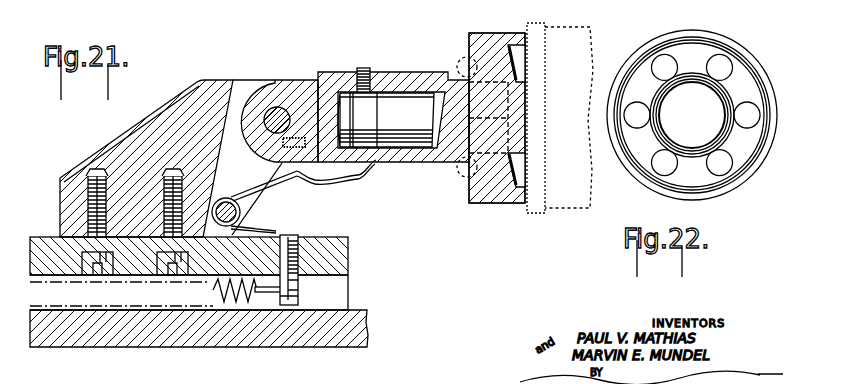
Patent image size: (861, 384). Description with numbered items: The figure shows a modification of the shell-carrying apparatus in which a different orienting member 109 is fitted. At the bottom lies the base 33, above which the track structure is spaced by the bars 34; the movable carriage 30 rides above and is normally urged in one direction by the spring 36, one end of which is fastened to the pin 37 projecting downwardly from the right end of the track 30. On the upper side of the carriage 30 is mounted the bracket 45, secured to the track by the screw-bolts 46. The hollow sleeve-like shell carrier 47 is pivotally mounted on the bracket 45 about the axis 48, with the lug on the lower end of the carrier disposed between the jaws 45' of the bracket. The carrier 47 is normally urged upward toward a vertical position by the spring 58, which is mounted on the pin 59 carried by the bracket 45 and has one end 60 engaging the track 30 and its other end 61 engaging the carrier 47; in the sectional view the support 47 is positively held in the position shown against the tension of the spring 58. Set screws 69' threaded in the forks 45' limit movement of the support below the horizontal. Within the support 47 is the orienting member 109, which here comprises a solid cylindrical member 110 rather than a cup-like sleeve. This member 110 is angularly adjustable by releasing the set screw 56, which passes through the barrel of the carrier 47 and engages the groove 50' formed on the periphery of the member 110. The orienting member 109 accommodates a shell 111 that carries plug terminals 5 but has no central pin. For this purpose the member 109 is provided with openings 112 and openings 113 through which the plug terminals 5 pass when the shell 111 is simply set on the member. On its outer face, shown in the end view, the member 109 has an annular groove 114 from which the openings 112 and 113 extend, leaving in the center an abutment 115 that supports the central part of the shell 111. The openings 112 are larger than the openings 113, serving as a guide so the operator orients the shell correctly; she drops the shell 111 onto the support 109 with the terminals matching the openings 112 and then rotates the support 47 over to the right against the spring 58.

In FIG. 21, the plug terminals 5 is at (463, 178).
In FIG. 21, the carriage 30 is at (349, 253).
In FIG. 21, the base 33 is at (366, 331).
In FIG. 21, the bars 34 is at (344, 297).
In FIG. 21, the spring 36 is at (221, 304).
In FIG. 21, the pin 37 is at (299, 283).
In FIG. 21, the bracket 45 is at (146, 158).
In FIG. 21, the jaws 45' is at (266, 108).
In FIG. 21, the screw-bolts 46 is at (90, 190).
In FIG. 21, the shell carrier 47 is at (386, 78).
In FIG. 21, the axis 48 is at (274, 108).
In FIG. 21, the groove 50' is at (384, 91).
In FIG. 21, the set screw 56 is at (357, 70).
In FIG. 21, the spring 58 is at (306, 181).
In FIG. 21, the pin 59 is at (241, 210).
In FIG. 21, the spring end 60 is at (271, 233).
In FIG. 21, the spring end 61 is at (362, 165).
In FIG. 21, the set screws 69' is at (252, 199).
In FIG. 21, the orienting member 109 is at (498, 30).
In FIG. 22, the orienting member 109 is at (728, 43).
In FIG. 21, the solid cylindrical member 110 is at (414, 128).
In FIG. 21, the shell 111 is at (577, 26).
In FIG. 21, the openings 112 is at (480, 32).
In FIG. 22, the openings 112 is at (712, 50).
In FIG. 21, the openings 113 is at (461, 180).
In FIG. 22, the openings 113 is at (749, 107).
In FIG. 21, the annular groove 114 is at (509, 62).
In FIG. 22, the annular groove 114 is at (643, 148).
In FIG. 21, the abutment 115 is at (526, 117).
In FIG. 22, the abutment 115 is at (675, 99).